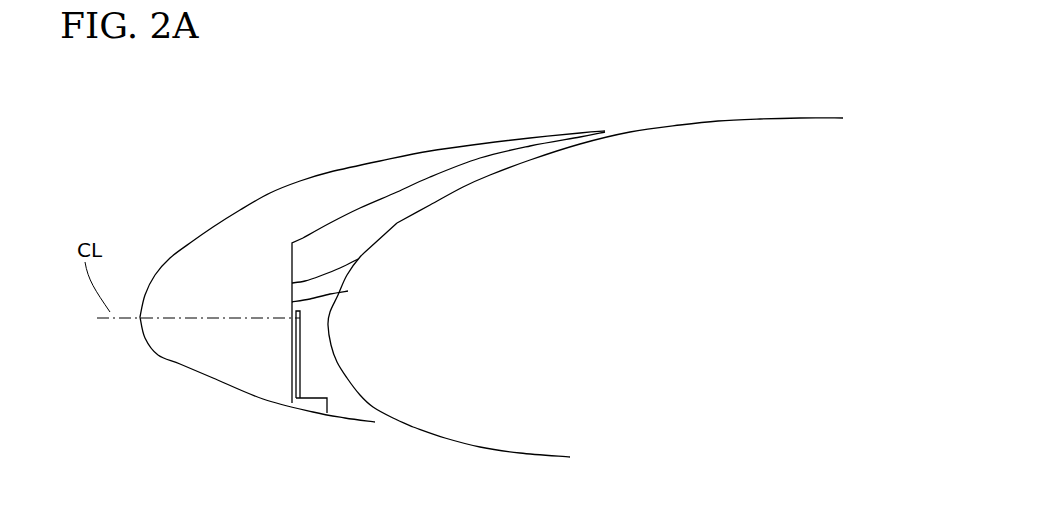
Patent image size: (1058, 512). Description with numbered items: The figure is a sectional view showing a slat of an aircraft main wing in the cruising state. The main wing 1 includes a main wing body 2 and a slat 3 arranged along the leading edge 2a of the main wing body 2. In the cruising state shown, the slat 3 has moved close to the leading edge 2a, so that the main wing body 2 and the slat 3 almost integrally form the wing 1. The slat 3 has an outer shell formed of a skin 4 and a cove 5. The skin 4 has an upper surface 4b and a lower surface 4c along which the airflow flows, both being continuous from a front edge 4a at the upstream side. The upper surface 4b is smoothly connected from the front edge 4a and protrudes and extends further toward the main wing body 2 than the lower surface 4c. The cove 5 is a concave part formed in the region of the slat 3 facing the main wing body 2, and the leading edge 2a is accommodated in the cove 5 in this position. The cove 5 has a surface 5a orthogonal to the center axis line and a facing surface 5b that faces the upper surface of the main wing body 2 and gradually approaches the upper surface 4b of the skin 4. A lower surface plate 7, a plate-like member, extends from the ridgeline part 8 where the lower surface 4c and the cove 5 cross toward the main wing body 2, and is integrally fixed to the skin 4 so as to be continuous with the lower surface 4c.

The main wing 1 is at (637, 90).
The main wing body 2 is at (720, 118).
The leading edge 2a is at (332, 325).
The slat 3 is at (326, 172).
The skin 4 is at (213, 226).
The front edge 4a is at (137, 318).
The upper surface 4b is at (393, 159).
The lower surface 4c is at (257, 400).
The cove 5 is at (358, 260).
The surface orthogonal to center axis line 5a is at (348, 291).
The facing surface 5b is at (430, 178).
The lower surface plate 7 is at (352, 420).
The ridgeline part 8 is at (290, 410).